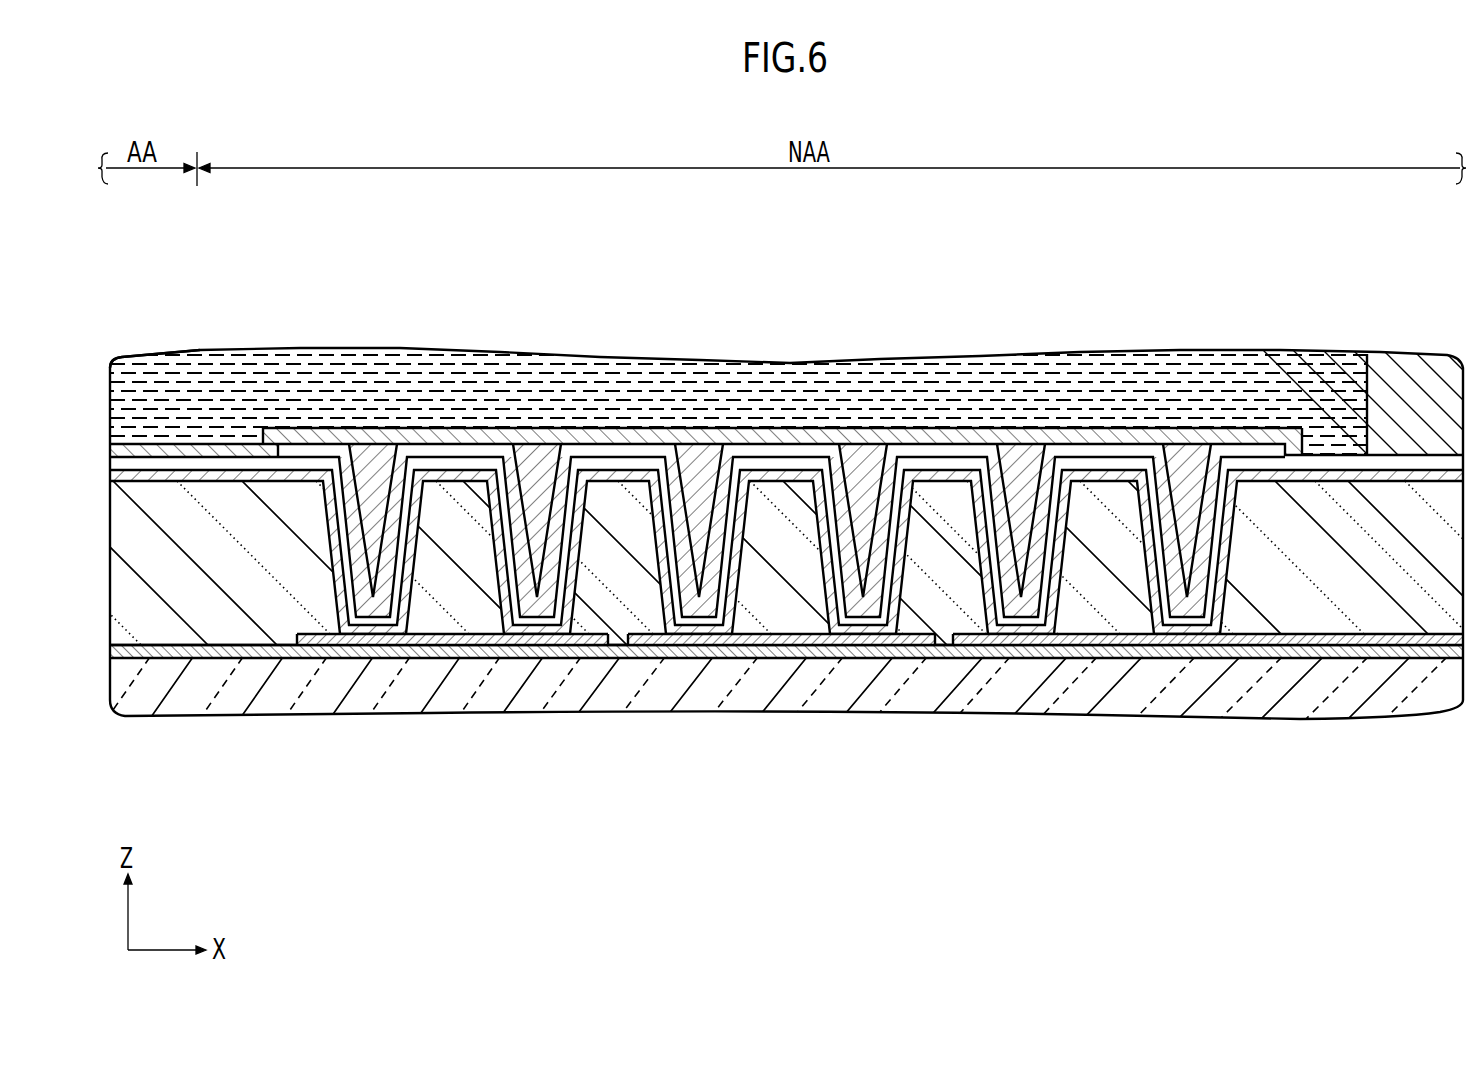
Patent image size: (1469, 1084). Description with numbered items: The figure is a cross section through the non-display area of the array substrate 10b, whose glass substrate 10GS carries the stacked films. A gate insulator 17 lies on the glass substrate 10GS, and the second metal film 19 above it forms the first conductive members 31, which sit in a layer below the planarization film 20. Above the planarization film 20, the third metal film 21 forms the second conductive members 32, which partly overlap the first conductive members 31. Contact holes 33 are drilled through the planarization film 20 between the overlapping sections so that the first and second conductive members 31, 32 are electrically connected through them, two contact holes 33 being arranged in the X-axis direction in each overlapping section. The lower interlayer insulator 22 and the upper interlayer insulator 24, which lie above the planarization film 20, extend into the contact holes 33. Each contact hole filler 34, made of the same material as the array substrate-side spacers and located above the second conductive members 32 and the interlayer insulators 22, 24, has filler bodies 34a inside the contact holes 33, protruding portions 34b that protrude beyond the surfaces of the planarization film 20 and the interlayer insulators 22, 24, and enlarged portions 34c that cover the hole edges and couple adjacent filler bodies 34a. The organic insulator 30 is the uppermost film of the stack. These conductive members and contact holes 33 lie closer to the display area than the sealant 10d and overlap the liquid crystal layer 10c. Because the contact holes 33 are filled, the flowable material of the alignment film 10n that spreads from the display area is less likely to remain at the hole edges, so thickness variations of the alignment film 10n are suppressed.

The alignment film 10n is at (143, 445).
The liquid crystal layer 10c is at (985, 395).
The sealant 10d is at (1405, 392).
The array substrate 10b is at (528, 672).
The glass substrate 10GS is at (768, 650).
The contact hole filler 34 is at (263, 438).
The organic insulator 30 is at (284, 348).
The filler body 34a is at (373, 510).
The protruding portion 34b is at (390, 500).
The enlarged portion 34c is at (292, 440).
The contact hole 33 is at (340, 600).
The upper interlayer insulator 24 is at (150, 448).
The lower interlayer insulator 22 is at (170, 462).
The planarization film 20 is at (208, 592).
The gate insulator 17 is at (228, 652).
The second conductive member 32 is at (373, 642).
The third metal film 21 is at (661, 720).
The first conductive member 31 is at (447, 638).
The second metal film 19 is at (880, 724).